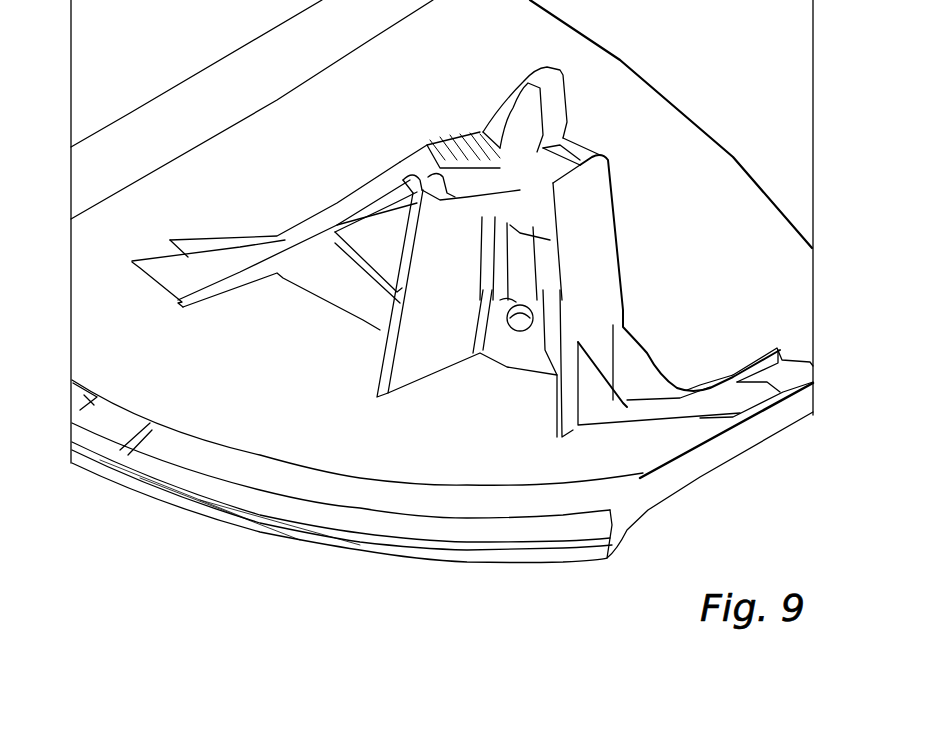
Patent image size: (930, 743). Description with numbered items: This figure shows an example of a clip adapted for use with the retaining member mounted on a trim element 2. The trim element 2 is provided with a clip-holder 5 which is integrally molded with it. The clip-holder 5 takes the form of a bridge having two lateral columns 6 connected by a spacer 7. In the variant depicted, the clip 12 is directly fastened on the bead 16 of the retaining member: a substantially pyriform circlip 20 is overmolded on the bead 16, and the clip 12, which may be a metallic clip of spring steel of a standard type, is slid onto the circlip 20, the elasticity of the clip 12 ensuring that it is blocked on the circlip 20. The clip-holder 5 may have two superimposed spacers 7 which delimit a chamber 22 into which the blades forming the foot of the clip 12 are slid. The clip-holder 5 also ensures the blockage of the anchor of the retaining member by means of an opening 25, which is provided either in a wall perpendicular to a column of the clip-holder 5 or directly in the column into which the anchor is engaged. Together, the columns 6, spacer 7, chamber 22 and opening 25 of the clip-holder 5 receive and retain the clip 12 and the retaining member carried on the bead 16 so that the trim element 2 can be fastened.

The trim element 2 is at (442, 471).
The clip-holder 5 is at (630, 300).
The lateral columns 6 is at (215, 282).
The spacer 7 is at (467, 197).
The clip 12 is at (553, 120).
The bead 16 is at (505, 303).
The circlip 20 is at (483, 142).
The chamber 22 is at (520, 233).
The opening 25 is at (517, 340).